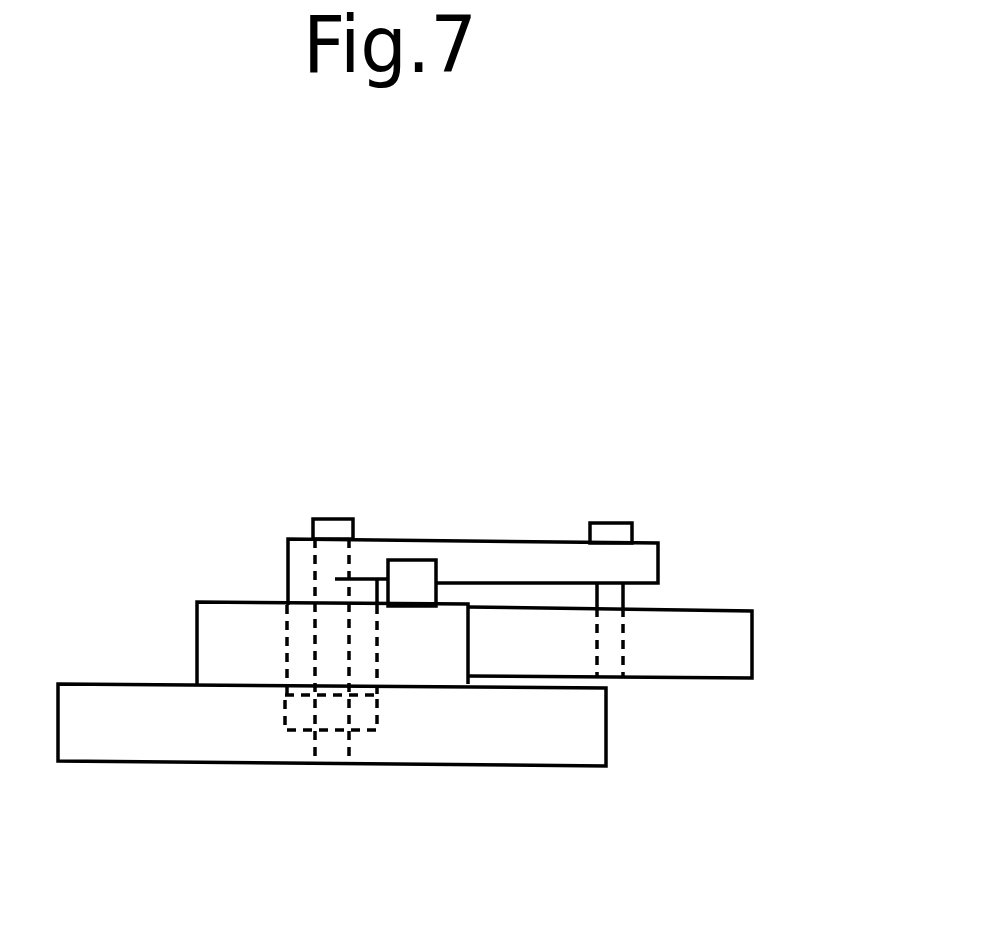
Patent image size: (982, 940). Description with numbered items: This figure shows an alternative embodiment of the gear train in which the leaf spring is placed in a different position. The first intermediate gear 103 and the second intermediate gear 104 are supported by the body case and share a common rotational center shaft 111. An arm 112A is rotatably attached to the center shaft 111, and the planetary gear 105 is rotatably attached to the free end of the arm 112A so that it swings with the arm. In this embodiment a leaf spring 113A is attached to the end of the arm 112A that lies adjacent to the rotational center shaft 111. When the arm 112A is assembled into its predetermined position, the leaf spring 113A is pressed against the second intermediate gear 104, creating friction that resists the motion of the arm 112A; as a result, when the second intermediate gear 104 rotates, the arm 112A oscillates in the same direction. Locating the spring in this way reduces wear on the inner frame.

The first intermediate gear 103 is at (606, 735).
The second intermediate gear 104 is at (197, 647).
The planetary gear 105 is at (752, 652).
The center shaft 111 is at (332, 765).
The arm 112A is at (548, 540).
The leaf spring 113A is at (413, 560).